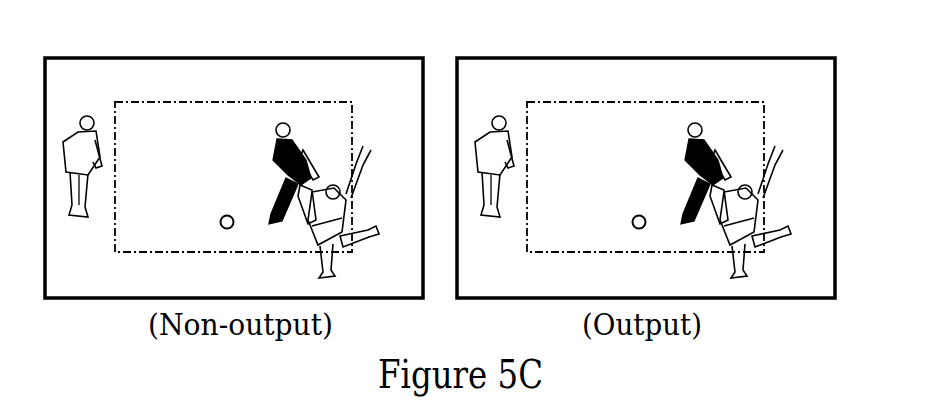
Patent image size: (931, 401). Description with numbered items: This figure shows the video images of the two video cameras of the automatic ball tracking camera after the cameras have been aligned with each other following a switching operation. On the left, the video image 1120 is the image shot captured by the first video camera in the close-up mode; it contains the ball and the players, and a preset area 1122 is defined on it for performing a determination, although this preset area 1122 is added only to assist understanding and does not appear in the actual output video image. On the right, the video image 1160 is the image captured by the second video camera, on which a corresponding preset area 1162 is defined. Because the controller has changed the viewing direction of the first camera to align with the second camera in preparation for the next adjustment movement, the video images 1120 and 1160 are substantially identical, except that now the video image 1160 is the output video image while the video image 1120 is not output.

The video image 1120 is at (258, 56).
The preset area 1122 is at (253, 101).
The video image 1160 is at (670, 56).
The preset area 1162 is at (665, 101).